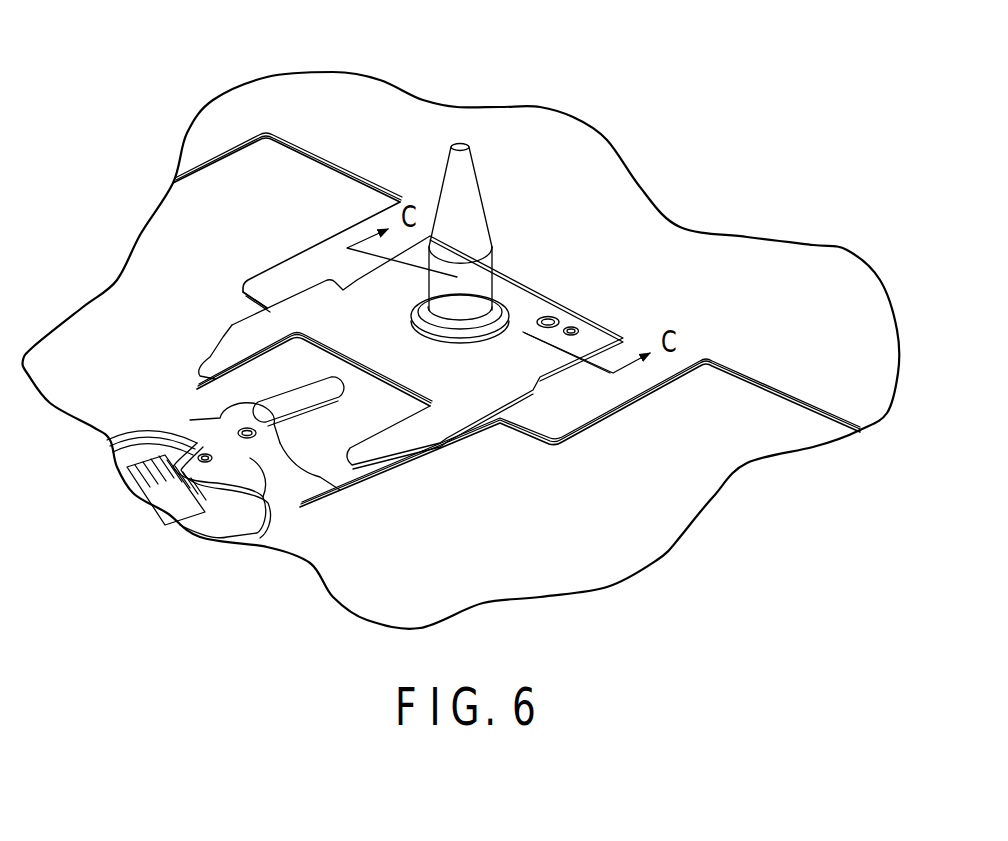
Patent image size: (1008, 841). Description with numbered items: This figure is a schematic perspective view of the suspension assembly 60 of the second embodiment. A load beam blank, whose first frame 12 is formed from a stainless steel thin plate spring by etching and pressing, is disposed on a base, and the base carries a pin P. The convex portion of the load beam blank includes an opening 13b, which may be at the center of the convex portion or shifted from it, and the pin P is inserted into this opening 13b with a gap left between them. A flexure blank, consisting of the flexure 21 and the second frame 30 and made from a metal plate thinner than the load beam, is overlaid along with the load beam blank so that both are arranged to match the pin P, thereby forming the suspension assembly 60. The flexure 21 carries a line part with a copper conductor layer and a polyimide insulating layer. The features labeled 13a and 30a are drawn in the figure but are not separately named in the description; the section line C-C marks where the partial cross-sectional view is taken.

The suspension assembly 60 is at (469, 84).
The pin P is at (465, 200).
The collar portion of plate 30a is at (512, 314).
The first frame 12 is at (808, 267).
The opening 13b is at (438, 312).
The bent tab of frame 13a is at (484, 334).
The second frame 30 is at (467, 403).
The flexure 21 is at (227, 508).